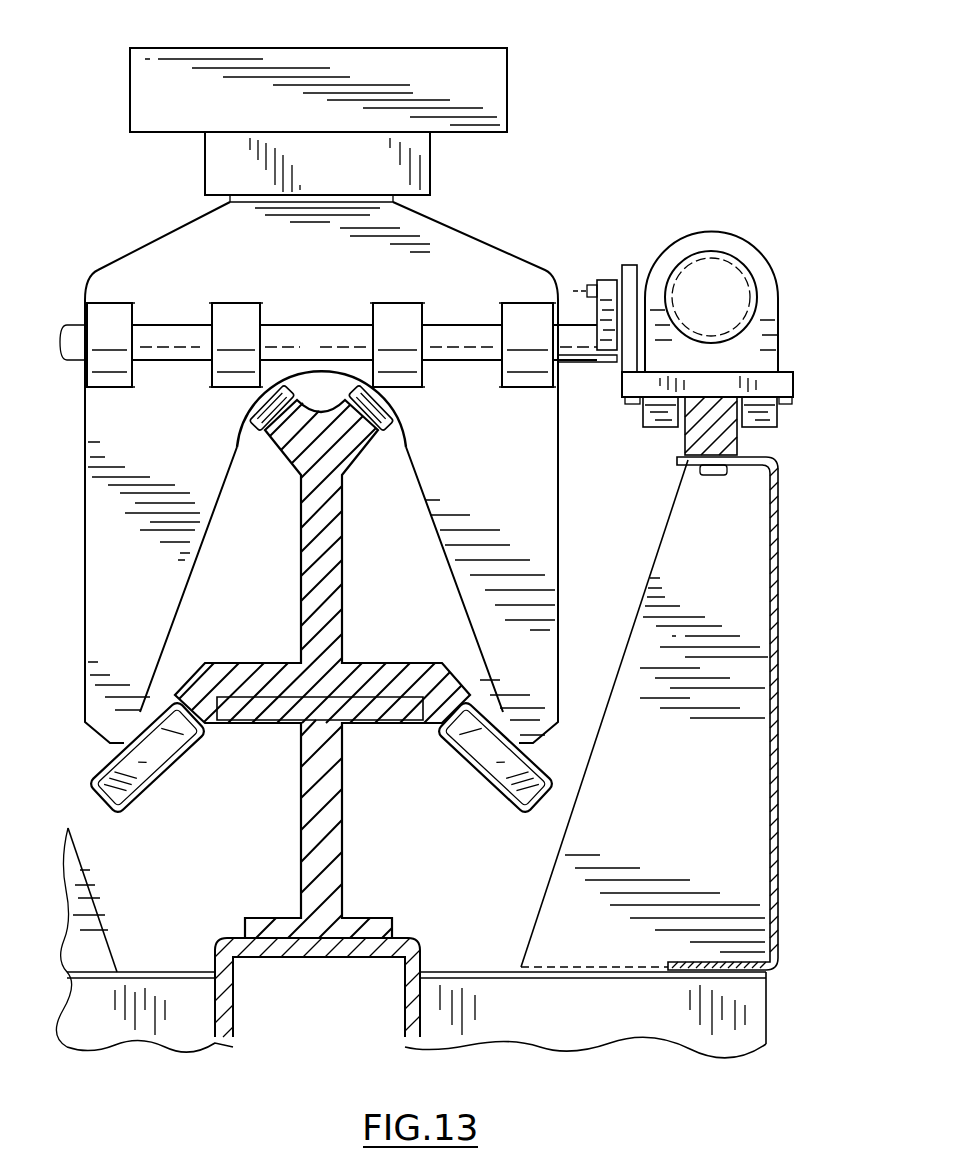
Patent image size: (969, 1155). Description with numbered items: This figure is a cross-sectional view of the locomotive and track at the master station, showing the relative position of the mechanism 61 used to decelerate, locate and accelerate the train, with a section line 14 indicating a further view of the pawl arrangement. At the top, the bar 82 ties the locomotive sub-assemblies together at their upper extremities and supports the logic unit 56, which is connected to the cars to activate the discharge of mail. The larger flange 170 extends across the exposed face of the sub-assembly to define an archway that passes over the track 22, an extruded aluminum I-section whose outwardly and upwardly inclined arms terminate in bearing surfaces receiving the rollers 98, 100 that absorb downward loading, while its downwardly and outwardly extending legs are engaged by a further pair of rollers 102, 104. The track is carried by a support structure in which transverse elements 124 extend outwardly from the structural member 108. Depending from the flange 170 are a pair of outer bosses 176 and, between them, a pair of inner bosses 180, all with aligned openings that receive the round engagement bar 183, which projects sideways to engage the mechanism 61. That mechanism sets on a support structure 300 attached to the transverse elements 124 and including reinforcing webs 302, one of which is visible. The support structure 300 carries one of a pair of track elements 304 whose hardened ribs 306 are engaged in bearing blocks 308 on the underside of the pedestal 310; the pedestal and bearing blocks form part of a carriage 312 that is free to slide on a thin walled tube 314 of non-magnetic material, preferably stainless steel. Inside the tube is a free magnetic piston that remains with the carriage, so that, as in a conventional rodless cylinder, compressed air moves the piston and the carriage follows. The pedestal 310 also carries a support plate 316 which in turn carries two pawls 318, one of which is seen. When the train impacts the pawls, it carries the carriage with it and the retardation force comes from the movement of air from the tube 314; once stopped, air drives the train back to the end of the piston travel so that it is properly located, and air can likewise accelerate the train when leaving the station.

The logic unit 56 is at (480, 57).
The bar 82 is at (425, 162).
The outer bosses 176 is at (108, 317).
The inner bosses 180 is at (390, 312).
The engagement bar 183 is at (460, 328).
The flange 170 is at (143, 578).
The roller 98 is at (240, 445).
The roller 100 is at (392, 445).
The track 22 is at (267, 818).
The roller 102 is at (97, 775).
The roller 104 is at (493, 793).
The structural member 108 is at (407, 1005).
The transverse element 124 is at (168, 977).
The reinforcing web 302 is at (85, 873).
The support structure 300 is at (780, 636).
The track element 304 is at (684, 466).
The hardened rib 306 is at (668, 427).
The bearing block 308 is at (643, 413).
The pedestal 310 is at (757, 377).
The carriage 312 is at (773, 255).
The thin walled tube 314 is at (712, 258).
The support plate 316 is at (630, 265).
The pawl 318 is at (595, 273).
The mechanism 61 is at (687, 197).
The section line 14- 14 is at (582, 250).